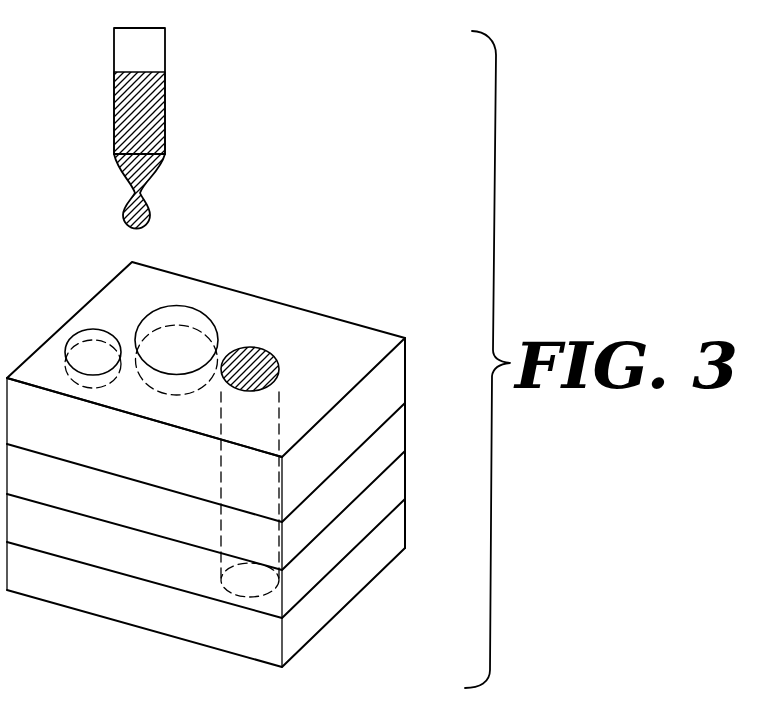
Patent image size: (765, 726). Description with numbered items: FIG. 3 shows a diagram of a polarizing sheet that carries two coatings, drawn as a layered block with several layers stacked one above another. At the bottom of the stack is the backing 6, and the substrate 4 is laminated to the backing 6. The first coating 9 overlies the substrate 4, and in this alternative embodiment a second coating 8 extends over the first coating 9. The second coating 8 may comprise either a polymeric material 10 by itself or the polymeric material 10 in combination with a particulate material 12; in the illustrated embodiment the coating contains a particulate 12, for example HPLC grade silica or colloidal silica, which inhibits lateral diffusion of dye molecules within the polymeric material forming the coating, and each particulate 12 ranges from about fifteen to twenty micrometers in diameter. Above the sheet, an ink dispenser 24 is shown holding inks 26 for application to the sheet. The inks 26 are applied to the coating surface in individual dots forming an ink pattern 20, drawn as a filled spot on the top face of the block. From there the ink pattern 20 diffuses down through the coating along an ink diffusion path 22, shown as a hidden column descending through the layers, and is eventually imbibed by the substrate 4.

The substrate 4 is at (390, 483).
The backing 6 is at (388, 530).
The second coating 8 is at (405, 390).
The first coating 9 is at (392, 438).
The polymeric material 10 is at (382, 382).
The particulate material 12 is at (87, 329).
The ink pattern 20 is at (268, 348).
The ink diffusion path 22 is at (276, 418).
The ink dispenser 24 is at (113, 56).
The inks 26 is at (133, 118).